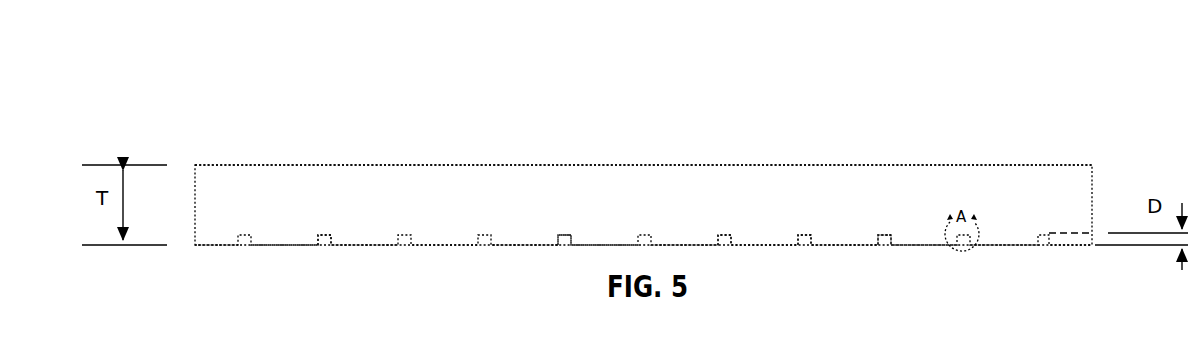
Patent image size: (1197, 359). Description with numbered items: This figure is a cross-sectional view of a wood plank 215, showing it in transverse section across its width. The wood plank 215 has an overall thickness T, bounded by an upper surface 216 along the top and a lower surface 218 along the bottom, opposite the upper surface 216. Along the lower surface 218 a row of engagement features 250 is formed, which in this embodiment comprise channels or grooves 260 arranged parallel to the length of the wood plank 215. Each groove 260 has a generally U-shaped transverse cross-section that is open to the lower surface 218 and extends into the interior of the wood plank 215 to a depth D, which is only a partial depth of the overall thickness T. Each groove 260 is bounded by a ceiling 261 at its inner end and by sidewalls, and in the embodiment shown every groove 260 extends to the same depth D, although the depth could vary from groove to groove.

The wood plank 215 is at (944, 126).
The upper surface 216 is at (318, 157).
The lower surface 218 is at (215, 252).
The engagement features 250 is at (324, 266).
The grooves 260 is at (884, 237).
The ceiling 261 is at (1078, 295).